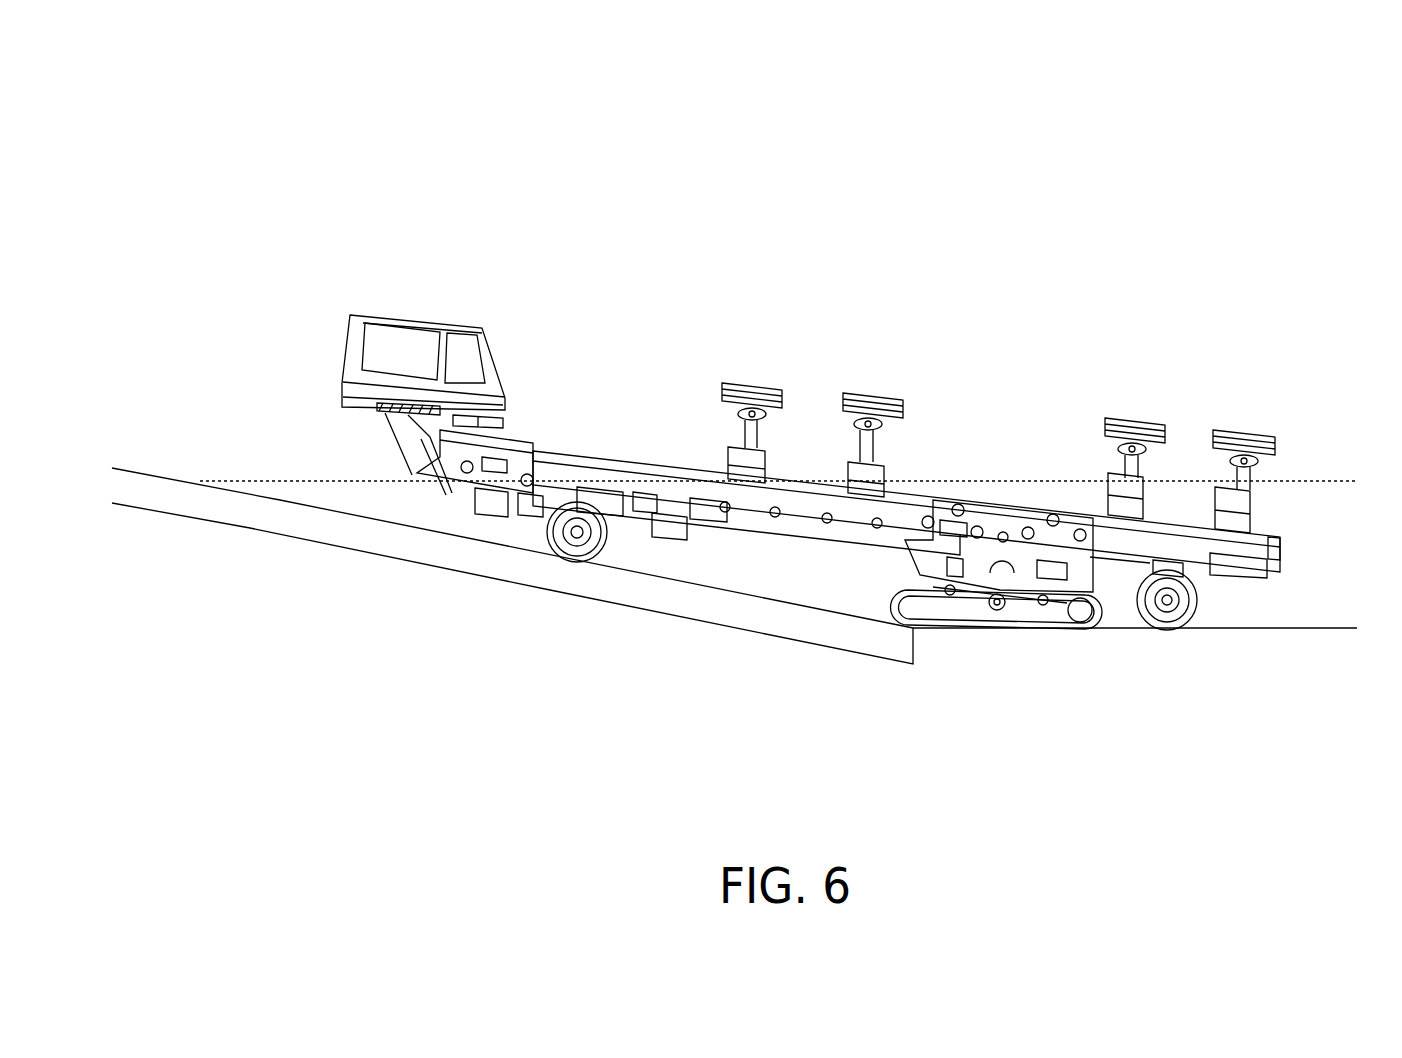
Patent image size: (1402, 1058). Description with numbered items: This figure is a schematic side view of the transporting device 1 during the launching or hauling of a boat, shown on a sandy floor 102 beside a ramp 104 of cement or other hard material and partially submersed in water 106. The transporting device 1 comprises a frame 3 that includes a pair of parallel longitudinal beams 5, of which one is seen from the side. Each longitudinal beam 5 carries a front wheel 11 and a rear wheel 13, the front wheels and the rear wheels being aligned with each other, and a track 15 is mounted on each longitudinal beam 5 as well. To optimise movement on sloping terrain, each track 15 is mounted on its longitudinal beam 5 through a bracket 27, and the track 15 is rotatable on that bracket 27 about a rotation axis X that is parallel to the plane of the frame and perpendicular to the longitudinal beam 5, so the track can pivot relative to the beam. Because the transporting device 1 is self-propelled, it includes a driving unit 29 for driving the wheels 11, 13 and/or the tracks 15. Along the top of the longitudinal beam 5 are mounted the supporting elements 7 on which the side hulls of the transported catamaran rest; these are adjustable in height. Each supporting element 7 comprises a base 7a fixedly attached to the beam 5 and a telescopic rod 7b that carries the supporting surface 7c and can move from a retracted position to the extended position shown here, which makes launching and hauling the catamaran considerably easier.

The transporting device 1 is at (402, 254).
The frame 3 is at (850, 520).
The longitudinal beam 5 is at (588, 465).
The supporting element 7 is at (935, 487).
The base 7a is at (728, 462).
The telescopic rod 7b is at (767, 437).
The supporting surface 7c is at (752, 390).
The front wheel 11 is at (565, 552).
The rear wheel 13 is at (1180, 628).
The track 15 is at (915, 628).
The bracket 27 is at (1043, 603).
The driving unit 29 is at (385, 350).
The rotation axis X is at (1015, 620).
The sandy floor 102 is at (260, 674).
The ramp 104 is at (233, 510).
The water 106 is at (1378, 575).